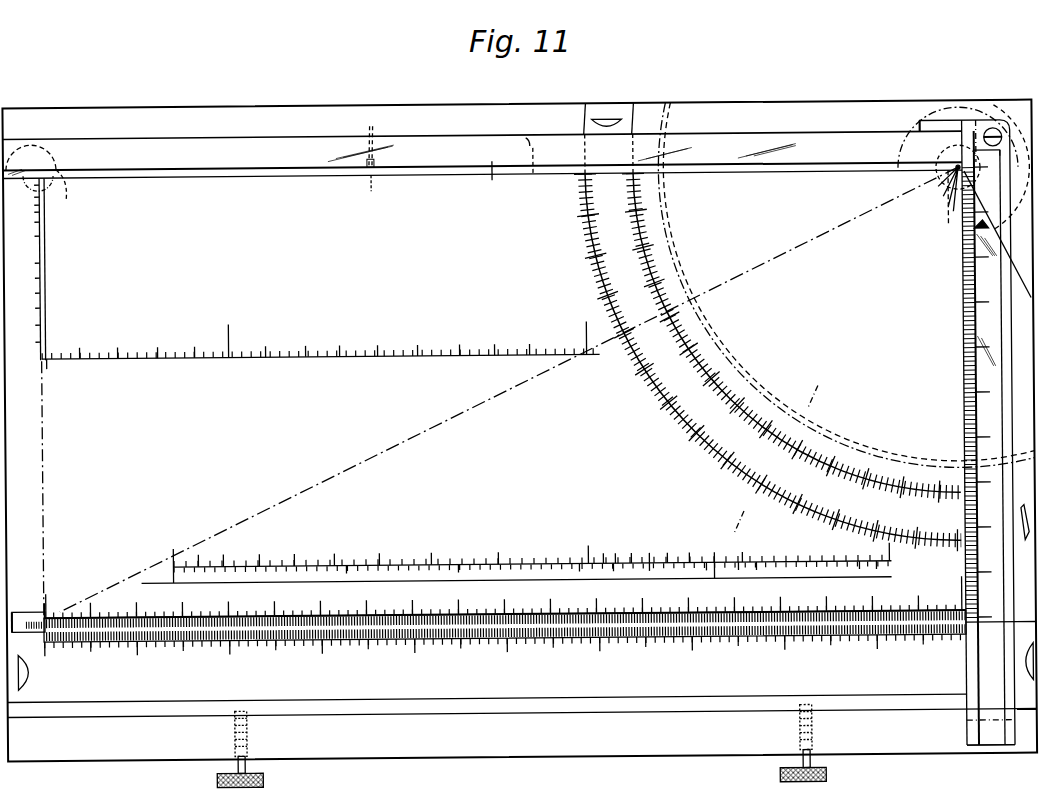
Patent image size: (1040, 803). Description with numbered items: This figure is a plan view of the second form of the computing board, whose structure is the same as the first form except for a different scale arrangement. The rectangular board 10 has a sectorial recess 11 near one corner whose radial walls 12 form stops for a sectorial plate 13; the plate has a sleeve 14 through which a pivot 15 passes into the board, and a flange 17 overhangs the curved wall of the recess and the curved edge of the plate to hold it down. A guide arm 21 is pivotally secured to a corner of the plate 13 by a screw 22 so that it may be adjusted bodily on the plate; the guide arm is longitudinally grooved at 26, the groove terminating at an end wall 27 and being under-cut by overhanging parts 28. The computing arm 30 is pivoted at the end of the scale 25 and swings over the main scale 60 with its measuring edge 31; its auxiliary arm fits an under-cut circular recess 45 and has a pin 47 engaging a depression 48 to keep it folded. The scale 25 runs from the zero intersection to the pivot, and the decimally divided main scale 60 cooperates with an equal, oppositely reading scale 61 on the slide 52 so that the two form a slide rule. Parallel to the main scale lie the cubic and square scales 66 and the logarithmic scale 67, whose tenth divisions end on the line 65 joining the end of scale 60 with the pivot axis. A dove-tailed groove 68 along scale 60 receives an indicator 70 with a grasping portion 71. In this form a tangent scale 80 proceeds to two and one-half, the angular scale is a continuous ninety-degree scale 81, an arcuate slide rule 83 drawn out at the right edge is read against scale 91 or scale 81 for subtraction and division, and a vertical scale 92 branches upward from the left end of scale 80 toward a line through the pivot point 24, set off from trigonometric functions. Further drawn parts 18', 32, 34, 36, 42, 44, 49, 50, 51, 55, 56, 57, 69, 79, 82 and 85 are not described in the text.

The rectangular board 10 is at (801, 104).
The sectorial recess 11 is at (962, 124).
The radial walls 12 is at (820, 403).
The sectorial plate 13 is at (979, 124).
The sleeve 14 is at (944, 201).
The pivot 15 is at (950, 160).
The flange 17 is at (940, 124).
The arcuate guide 18' is at (947, 135).
The guide arm 21 is at (964, 671).
The screw 22 is at (996, 132).
The pivot point 24 is at (958, 173).
The scale 25 is at (964, 359).
The groove 26 is at (964, 295).
The end wall 27 is at (1012, 140).
The overhanging parts 28 is at (1000, 749).
The computing arm 30 is at (483, 166).
The measuring edge 31 is at (354, 174).
The bracket arm 32 is at (925, 124).
The square root window 34 is at (1012, 216).
The pointer 36 is at (976, 242).
The spring 42 is at (69, 194).
The pin 44 is at (34, 150).
The circular recess 45 is at (60, 152).
The pin 47 is at (370, 184).
The depression 48 is at (370, 137).
The cursor 49 is at (530, 138).
The pin 50 is at (536, 148).
The base plate 51 is at (633, 725).
The slide 52 is at (505, 653).
The lower bar 55 is at (409, 727).
The knob 56 is at (262, 779).
The pin 57 is at (1001, 614).
The main scale 60 is at (660, 614).
The decimal scale 61 is at (502, 654).
The line 65 is at (505, 396).
The cubic and square scales 66 is at (548, 564).
The logarithmic scale 67 is at (460, 580).
The dove-tailed groove 68 is at (931, 591).
The indicator 69 is at (46, 604).
The indicator 70 is at (34, 614).
The grasping portion 71 is at (16, 614).
The square root scale 79 is at (1012, 296).
The tangent scale 80 is at (322, 360).
The continuous arcuate scale 81 is at (700, 348).
The lens 82 is at (30, 672).
The arcuate slide rule 83 is at (670, 410).
The lens 85 is at (612, 118).
The scale 91 is at (704, 448).
The vertical scale 92 is at (46, 275).